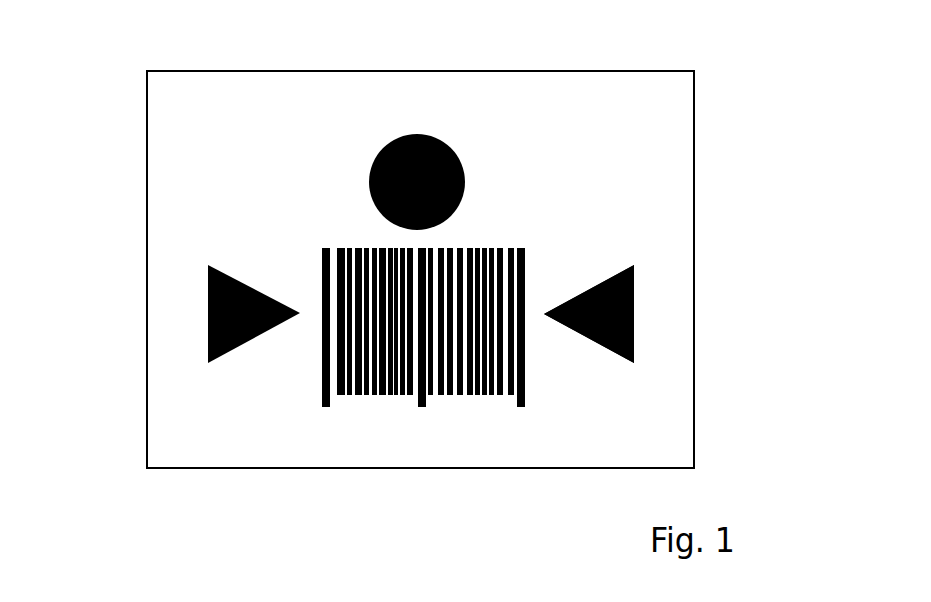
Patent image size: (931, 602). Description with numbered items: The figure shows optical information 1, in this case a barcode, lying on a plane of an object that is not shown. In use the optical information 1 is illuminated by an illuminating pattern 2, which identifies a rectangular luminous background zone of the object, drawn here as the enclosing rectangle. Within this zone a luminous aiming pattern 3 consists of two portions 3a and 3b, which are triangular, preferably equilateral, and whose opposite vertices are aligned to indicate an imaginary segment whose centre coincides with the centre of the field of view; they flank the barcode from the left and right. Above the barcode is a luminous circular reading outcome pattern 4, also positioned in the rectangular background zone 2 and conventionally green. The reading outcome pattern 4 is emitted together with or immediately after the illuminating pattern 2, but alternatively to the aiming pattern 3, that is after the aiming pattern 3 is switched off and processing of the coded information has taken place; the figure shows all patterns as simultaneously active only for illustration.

The optical information 1 is at (322, 237).
The illuminating pattern 2 is at (608, 62).
The luminous aiming pattern 3 is at (588, 268).
The triangular portion 3a is at (208, 307).
The triangular portion 3b is at (634, 310).
The luminous circular reading outcome pattern 4 is at (366, 142).